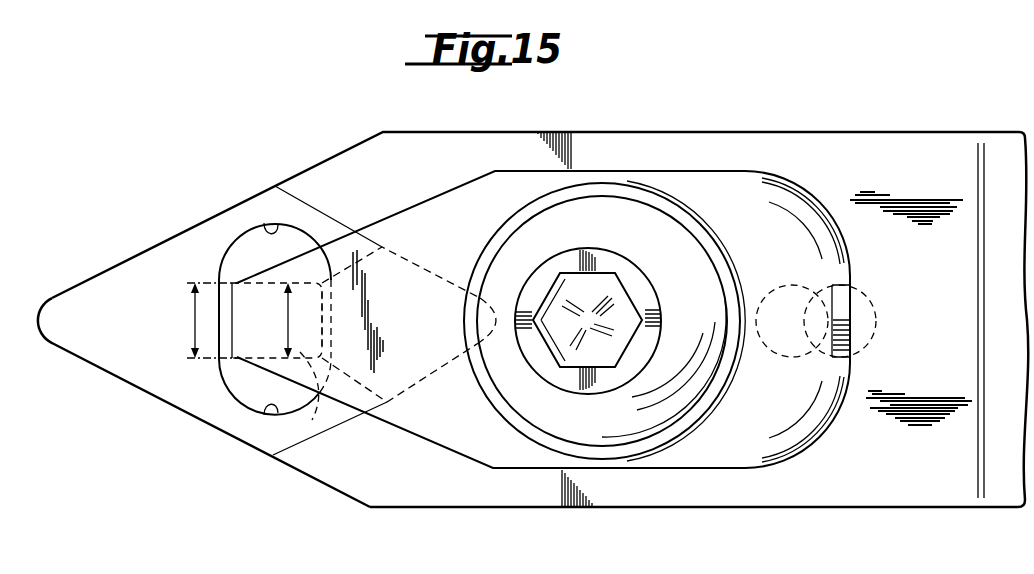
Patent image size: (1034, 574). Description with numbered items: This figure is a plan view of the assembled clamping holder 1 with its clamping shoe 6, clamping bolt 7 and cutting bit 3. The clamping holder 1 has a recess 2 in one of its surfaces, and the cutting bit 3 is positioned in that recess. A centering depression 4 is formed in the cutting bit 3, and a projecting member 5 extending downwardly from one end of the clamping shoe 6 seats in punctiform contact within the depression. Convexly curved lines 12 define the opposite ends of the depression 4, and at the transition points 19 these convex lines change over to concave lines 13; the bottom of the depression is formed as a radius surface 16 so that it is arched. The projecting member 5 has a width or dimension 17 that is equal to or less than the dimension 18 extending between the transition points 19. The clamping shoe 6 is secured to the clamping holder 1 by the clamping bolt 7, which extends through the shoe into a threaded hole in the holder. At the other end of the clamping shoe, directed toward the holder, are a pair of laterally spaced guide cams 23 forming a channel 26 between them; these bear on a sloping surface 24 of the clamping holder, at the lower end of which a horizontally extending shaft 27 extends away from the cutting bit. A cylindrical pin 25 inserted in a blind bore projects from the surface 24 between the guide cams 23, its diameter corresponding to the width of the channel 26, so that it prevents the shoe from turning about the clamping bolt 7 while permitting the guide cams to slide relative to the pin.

The clamping holder 1 is at (935, 124).
The recess 2 is at (456, 352).
The cutting bit 3 is at (162, 404).
The centering recess or depression 4 is at (243, 248).
The projecting member 5 is at (316, 426).
The clamping shoe 6 is at (597, 166).
The clamping bolt 7 is at (652, 222).
The convexly curved lines 12 is at (264, 224).
The concave lines 13 is at (330, 321).
The radius surface 16 is at (303, 246).
The width or dimension 17 is at (288, 312).
The dimension 18 is at (195, 312).
The transition points 19 is at (218, 280).
The guide cams 23 is at (828, 232).
The sloping surface 24 is at (857, 150).
The cylindrical pin 25 is at (840, 308).
The channel 26 is at (840, 353).
The shaft 27 is at (1004, 148).